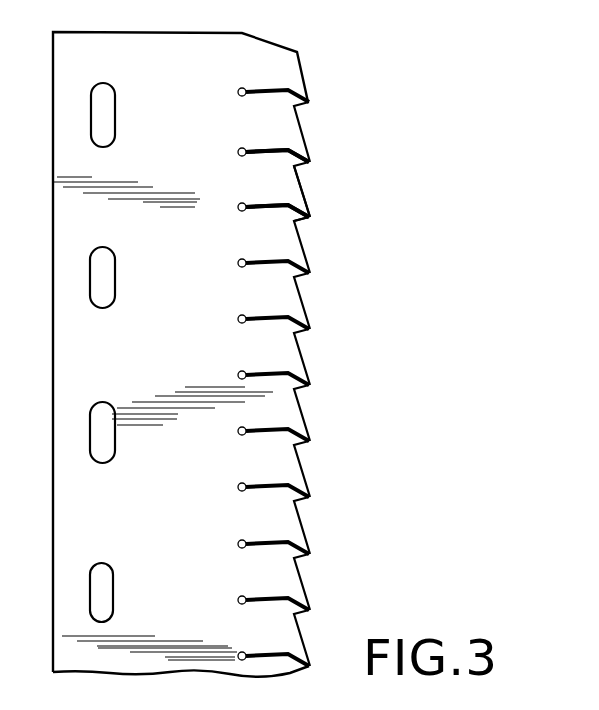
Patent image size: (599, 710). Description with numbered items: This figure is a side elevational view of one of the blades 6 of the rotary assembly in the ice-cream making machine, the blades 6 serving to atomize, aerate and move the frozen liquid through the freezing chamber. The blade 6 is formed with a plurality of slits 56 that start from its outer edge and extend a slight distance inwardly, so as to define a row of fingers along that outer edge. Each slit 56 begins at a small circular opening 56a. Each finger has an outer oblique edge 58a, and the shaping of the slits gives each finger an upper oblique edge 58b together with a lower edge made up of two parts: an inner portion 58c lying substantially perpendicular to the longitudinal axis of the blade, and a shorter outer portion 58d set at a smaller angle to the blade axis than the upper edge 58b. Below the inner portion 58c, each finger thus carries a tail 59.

The blade 6 is at (200, 138).
The slit 56 is at (262, 377).
The small circular opening 56a is at (238, 266).
The outer oblique edge 58a is at (305, 185).
The upper oblique edge 58b is at (284, 157).
The inner portion of lower edge 58c is at (263, 212).
The outer portion of lower edge 58d is at (303, 220).
The tail 59 is at (300, 207).